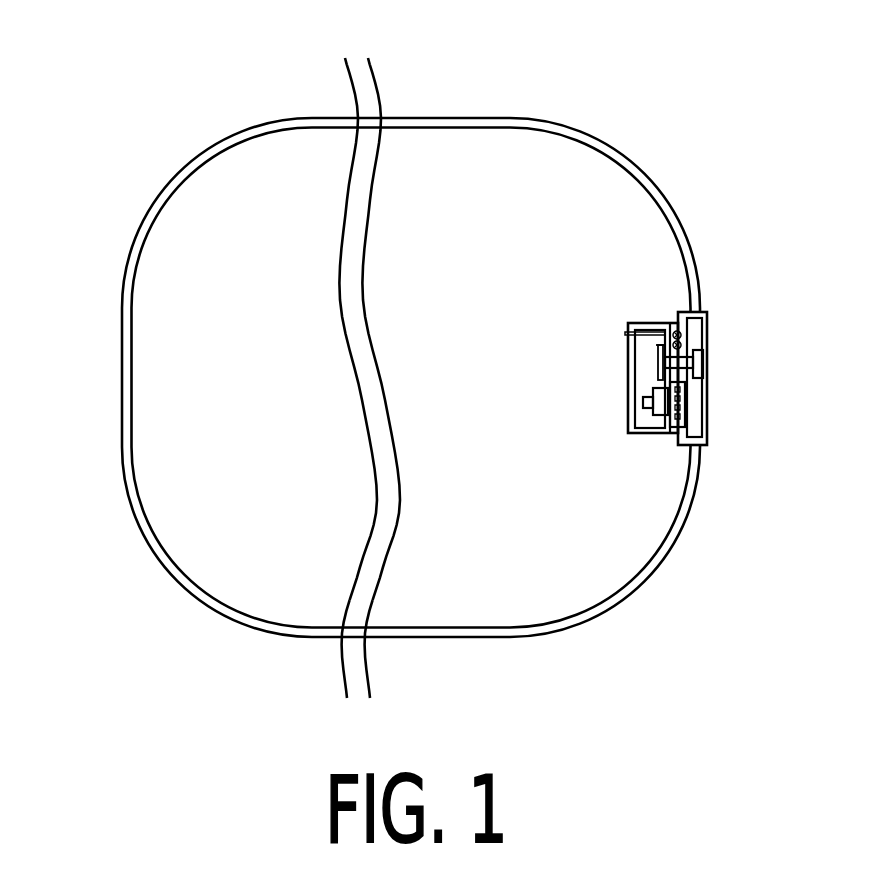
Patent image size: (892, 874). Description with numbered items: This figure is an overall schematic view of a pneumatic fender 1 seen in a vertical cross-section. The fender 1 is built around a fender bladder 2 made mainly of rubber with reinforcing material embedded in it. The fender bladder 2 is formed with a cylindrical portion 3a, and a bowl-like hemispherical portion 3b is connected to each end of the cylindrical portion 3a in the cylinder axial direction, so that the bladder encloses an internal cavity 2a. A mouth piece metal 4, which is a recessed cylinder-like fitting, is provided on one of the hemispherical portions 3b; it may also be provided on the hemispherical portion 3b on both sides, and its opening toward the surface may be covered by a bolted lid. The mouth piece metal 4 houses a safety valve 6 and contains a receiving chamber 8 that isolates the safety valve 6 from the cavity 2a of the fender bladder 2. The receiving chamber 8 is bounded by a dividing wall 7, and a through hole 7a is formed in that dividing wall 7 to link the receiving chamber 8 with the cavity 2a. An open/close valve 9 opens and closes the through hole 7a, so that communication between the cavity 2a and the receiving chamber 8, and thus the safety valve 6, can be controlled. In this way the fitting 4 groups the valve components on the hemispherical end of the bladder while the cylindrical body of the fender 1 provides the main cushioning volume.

The pneumatic fender 1 is at (140, 198).
The fender bladder 2 is at (433, 118).
The cavity 2a is at (415, 607).
The cylindrical portion 3a is at (470, 629).
The hemispherical portion 3b is at (127, 336).
The mouth piece metal 4 is at (705, 310).
The safety valve 6 is at (657, 414).
The dividing wall 7 is at (628, 416).
The through hole 7a is at (627, 370).
The receiving chamber 8 is at (644, 323).
The open/close valve 9 is at (657, 362).